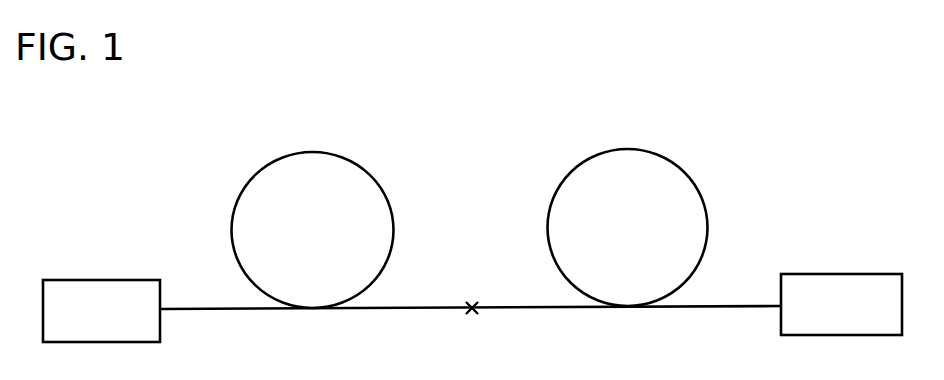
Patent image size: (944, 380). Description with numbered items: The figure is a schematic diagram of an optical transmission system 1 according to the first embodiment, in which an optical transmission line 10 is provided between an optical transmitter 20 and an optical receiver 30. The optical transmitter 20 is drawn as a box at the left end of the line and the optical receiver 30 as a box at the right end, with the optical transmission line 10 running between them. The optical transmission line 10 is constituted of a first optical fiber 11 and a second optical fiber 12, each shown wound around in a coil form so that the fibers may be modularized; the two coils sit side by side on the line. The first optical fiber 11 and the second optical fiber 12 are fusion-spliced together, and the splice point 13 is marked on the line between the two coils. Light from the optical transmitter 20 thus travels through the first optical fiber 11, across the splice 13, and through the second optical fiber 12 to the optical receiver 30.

The optical transmission system 1 is at (765, 127).
The optical transmission line 10 is at (506, 115).
The first optical fiber 11 is at (372, 175).
The second optical fiber 12 is at (567, 175).
The connection point (splice) 13 is at (472, 307).
The optical transmitter 20 is at (100, 280).
The optical receiver 30 is at (842, 273).